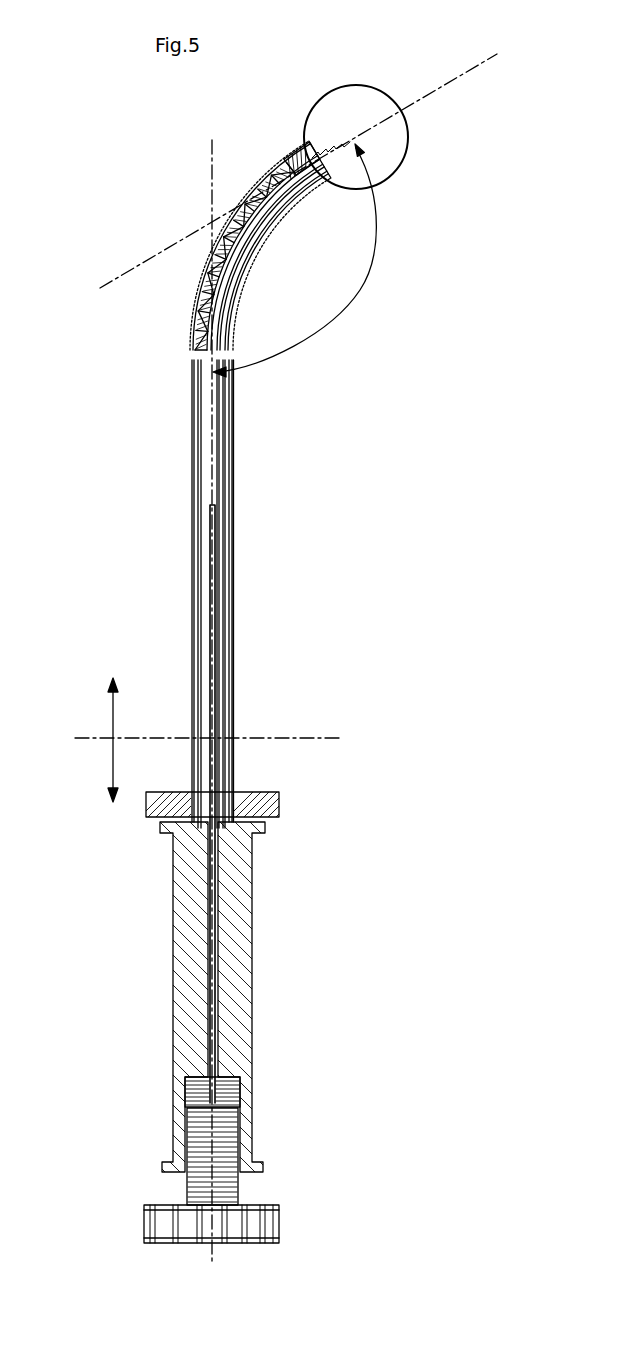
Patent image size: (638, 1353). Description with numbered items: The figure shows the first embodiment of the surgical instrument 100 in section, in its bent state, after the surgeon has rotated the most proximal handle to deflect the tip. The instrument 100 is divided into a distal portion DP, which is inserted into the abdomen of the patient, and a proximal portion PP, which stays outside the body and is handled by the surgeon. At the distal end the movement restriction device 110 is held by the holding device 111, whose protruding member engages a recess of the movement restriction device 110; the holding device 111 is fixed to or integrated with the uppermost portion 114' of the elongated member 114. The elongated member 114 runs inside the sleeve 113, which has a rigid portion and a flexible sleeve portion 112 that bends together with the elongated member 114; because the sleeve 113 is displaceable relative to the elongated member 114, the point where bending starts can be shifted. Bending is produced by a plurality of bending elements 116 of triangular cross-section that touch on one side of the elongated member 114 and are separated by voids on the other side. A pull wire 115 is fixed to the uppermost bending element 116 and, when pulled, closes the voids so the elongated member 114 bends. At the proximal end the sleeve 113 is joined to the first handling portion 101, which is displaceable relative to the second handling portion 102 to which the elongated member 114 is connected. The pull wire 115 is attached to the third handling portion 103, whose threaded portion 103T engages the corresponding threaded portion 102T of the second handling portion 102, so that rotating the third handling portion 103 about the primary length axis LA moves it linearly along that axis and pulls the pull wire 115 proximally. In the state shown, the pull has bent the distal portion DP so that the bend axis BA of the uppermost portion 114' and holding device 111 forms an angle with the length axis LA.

The surgical instrument 100 is at (170, 471).
The first handling portion 101 is at (277, 803).
The second handling portion 102 is at (255, 937).
The threaded portion 102T is at (232, 1086).
The third handling portion 103 is at (268, 1232).
The threaded portion 103T is at (220, 1157).
The movement restriction device 110 is at (353, 88).
The holding device 111 is at (329, 179).
The flexible sleeve portion 112 is at (252, 254).
The sleeve 113 is at (233, 477).
The elongated member 114 is at (271, 594).
The uppermost portion of the elongated member 114' is at (259, 230).
The pull wire 115 is at (217, 628).
The bending elements 116 is at (211, 337).
The bend axis BA is at (279, 181).
The primary length axis LA is at (209, 1278).
The distal portion DP is at (108, 722).
The proximal portion PP is at (106, 810).